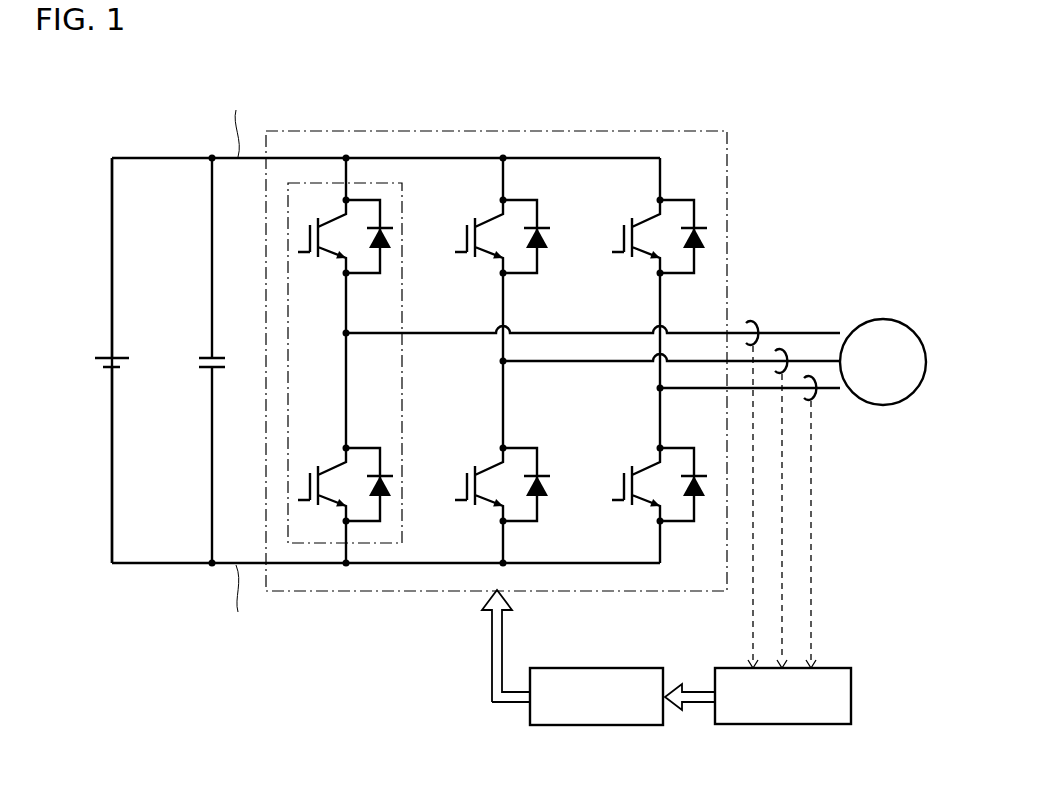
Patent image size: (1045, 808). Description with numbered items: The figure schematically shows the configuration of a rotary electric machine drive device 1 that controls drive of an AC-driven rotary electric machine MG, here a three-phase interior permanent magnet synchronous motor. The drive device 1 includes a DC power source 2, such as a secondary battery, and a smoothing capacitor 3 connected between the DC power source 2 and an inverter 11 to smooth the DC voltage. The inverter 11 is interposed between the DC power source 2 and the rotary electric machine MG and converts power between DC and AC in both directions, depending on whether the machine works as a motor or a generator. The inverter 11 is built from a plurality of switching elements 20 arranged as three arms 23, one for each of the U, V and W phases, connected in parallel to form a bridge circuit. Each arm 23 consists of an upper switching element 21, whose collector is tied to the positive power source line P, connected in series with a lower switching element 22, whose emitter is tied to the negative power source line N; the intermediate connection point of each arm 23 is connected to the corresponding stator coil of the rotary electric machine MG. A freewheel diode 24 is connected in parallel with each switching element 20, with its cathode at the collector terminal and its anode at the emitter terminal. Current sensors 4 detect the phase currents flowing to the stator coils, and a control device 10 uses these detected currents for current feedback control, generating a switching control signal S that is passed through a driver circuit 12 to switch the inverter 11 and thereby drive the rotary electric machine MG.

The rotary electric machine drive device 1 is at (830, 107).
The DC power source 2 is at (103, 355).
The smoothing capacitor 3 is at (207, 355).
The current sensor 4 is at (786, 351).
The control device 10 is at (851, 695).
The inverter 11 is at (727, 201).
The driver circuit 12 is at (598, 668).
The switching element 20 is at (498, 365).
The upper switching element 21 is at (332, 221).
The lower switching element 22 is at (325, 500).
The arm 23 is at (393, 183).
The freewheel diode 24 is at (386, 248).